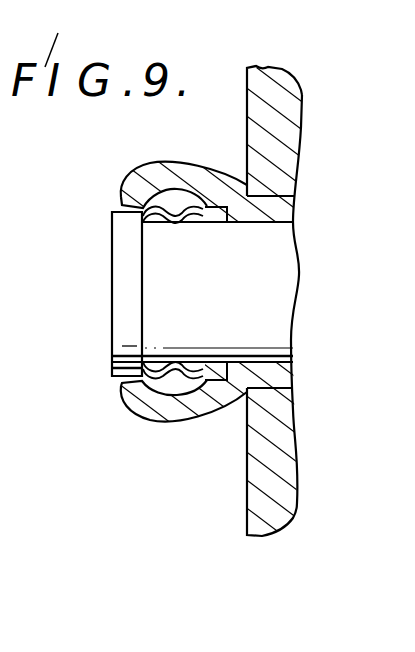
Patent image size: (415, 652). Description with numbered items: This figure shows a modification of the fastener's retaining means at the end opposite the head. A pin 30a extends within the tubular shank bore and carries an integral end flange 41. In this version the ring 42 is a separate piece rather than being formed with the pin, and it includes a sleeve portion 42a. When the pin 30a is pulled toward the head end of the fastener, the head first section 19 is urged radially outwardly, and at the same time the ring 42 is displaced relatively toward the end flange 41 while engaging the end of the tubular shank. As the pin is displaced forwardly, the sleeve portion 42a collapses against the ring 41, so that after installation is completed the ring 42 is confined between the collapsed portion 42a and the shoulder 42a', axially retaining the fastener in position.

The head first section 19 is at (277, 87).
The flange 42 is at (215, 207).
The sleeve portion 42a is at (129, 326).
The shoulder 42a' is at (200, 348).
The end flange 41 is at (120, 242).
The pin 30a is at (278, 310).